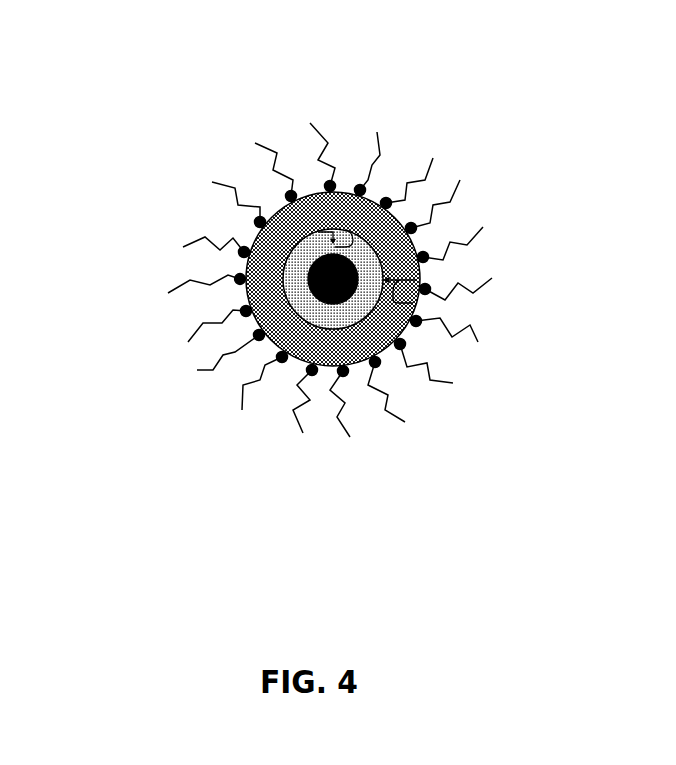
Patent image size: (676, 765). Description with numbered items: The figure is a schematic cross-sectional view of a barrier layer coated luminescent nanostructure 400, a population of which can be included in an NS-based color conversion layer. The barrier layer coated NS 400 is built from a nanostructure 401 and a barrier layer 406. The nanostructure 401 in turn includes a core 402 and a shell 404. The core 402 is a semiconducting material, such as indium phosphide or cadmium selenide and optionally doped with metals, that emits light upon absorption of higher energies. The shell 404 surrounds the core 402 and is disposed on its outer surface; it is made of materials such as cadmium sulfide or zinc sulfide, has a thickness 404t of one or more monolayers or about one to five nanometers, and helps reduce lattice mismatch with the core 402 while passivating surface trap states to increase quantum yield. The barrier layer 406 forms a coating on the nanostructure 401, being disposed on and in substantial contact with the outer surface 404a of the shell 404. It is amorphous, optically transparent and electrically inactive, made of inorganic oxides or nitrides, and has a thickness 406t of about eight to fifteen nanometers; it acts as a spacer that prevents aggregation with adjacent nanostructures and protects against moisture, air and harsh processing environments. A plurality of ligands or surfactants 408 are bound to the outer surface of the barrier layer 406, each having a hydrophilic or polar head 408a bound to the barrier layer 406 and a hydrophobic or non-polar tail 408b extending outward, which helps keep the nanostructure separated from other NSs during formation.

The barrier layer coated luminescent nanostructure 400 is at (299, 341).
The nanostructure 401 is at (262, 316).
The core 402 is at (317, 295).
The shell 404 is at (309, 288).
The outer surface of shell 404a is at (318, 232).
The shell thickness 404t is at (347, 230).
The barrier layer 406 is at (406, 362).
The barrier layer thickness 406t is at (413, 303).
The ligands or surfactants 408 is at (139, 279).
The hydrophilic or polar heads 408a is at (241, 280).
The hydrophobic or non-polar tails 408b is at (167, 308).